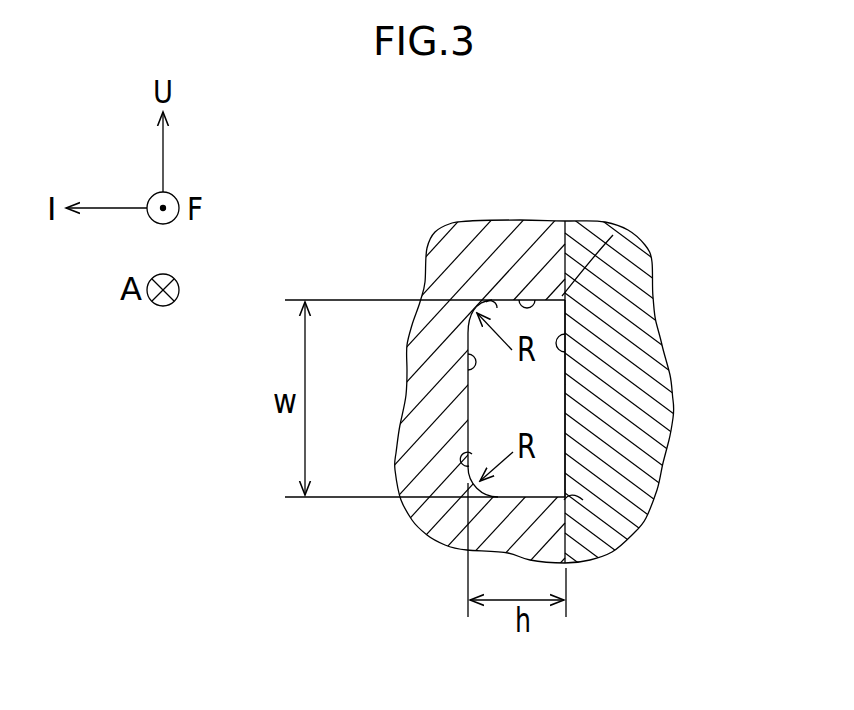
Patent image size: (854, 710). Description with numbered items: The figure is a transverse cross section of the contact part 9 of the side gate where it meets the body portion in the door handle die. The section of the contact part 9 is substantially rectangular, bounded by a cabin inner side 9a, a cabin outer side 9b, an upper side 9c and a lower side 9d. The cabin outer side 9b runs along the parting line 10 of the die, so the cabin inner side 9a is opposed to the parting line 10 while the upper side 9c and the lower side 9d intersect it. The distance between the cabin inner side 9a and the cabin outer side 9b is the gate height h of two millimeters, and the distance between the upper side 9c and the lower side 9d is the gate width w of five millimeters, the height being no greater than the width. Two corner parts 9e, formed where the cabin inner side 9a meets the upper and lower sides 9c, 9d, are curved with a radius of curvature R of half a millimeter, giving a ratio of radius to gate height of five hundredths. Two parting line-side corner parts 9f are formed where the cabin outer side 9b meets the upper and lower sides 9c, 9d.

The contact part 9 is at (554, 411).
The parting line 10 is at (566, 242).
The cabin inner side 9a is at (468, 369).
The cabin outer side 9b is at (565, 335).
The upper side 9c is at (528, 300).
The lower side 9d is at (532, 490).
The corner parts 9e is at (492, 300).
The parting line-side corner parts 9f is at (560, 296).